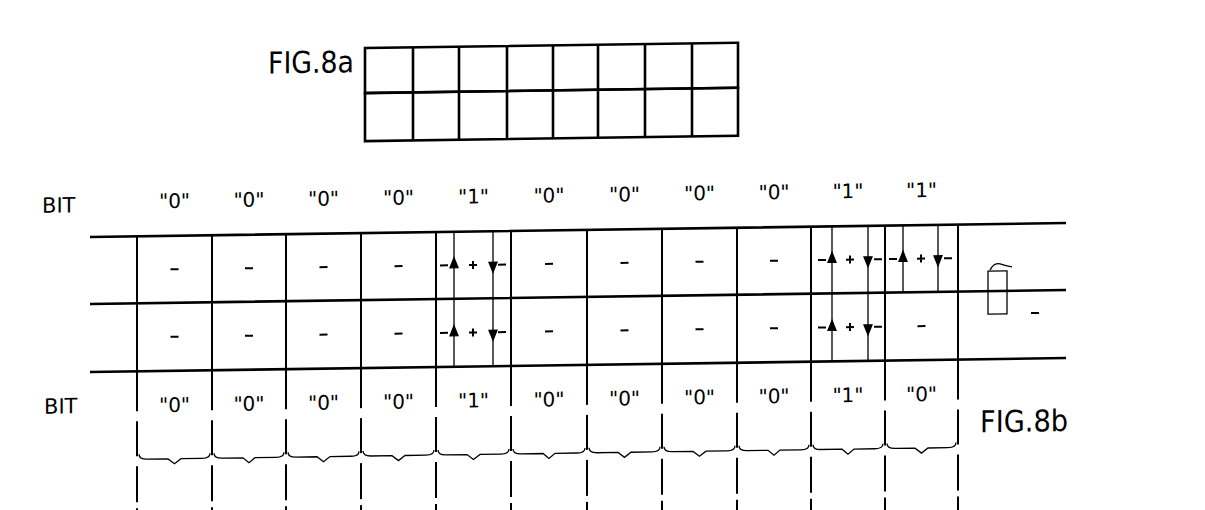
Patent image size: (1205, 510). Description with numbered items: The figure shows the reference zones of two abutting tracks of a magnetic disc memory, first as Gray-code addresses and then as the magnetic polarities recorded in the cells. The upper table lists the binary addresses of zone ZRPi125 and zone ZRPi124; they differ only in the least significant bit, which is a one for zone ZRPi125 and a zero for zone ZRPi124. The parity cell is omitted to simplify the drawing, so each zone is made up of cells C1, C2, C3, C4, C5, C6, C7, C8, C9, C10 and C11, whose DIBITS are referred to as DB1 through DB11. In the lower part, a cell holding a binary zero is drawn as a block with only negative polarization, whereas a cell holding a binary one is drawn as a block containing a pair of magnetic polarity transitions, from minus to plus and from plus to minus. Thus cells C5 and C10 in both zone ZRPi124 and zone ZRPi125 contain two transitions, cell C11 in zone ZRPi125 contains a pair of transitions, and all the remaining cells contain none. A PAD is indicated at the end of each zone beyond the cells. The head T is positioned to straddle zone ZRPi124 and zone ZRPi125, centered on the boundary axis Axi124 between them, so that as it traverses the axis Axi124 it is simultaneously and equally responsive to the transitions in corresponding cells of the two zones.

In FIG. 8a, the reference zone of track 125 ZRPi125 is at (739, 76).
In FIG. 8b, the reference zone of track 125 ZRPi125 is at (554, 264).
In FIG. 8a, the reference zone of track 124 ZRPi124 is at (739, 121).
In FIG. 8b, the reference zone of track 124 ZRPi124 is at (554, 342).
In FIG. 8b, the pad PAD is at (959, 258).
In FIG. 8b, the head T is at (1007, 289).
In FIG. 8b, the axis Axi124 is at (1092, 297).
In FIG. 8b, the cell C1 is at (173, 372).
In FIG. 8b, the cell C2 is at (248, 372).
In FIG. 8b, the cell C3 is at (322, 371).
In FIG. 8b, the cell C4 is at (397, 371).
In FIG. 8b, the cell C5 is at (472, 370).
In FIG. 8b, the cell C6 is at (548, 370).
In FIG. 8b, the cell C7 is at (623, 369).
In FIG. 8b, the cell C8 is at (698, 369).
In FIG. 8b, the cell C9 is at (773, 368).
In FIG. 8b, the cell C10 is at (847, 368).
In FIG. 8b, the cell C11 is at (921, 367).